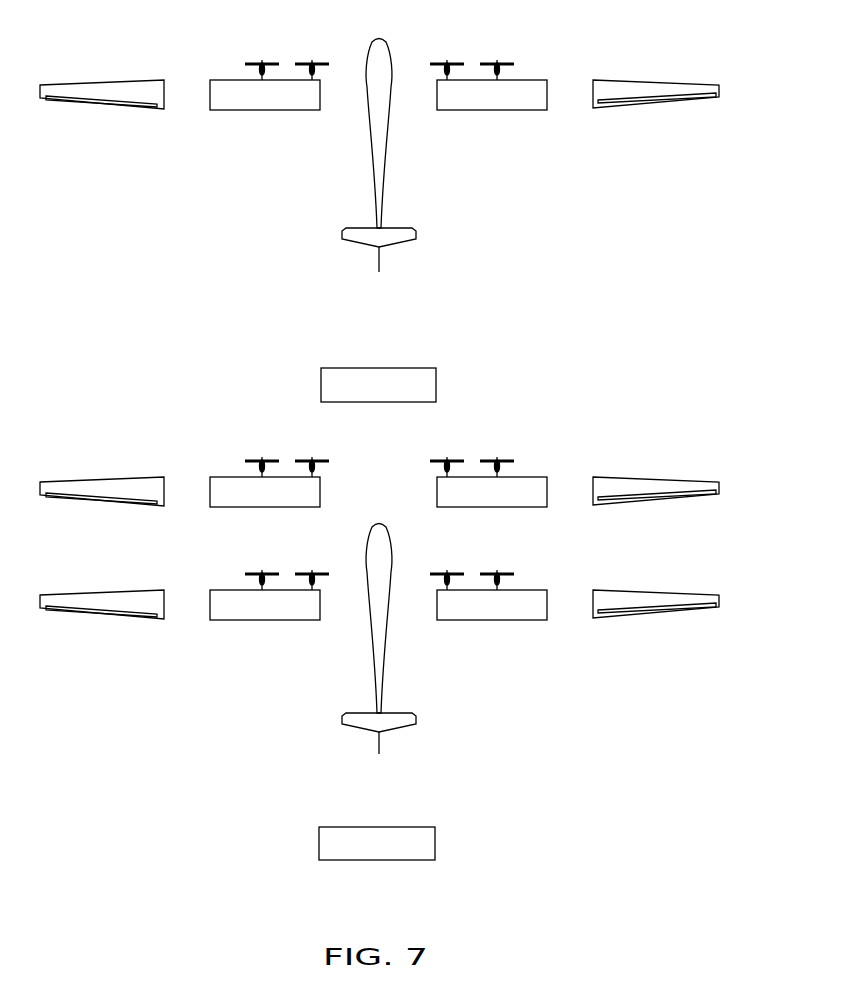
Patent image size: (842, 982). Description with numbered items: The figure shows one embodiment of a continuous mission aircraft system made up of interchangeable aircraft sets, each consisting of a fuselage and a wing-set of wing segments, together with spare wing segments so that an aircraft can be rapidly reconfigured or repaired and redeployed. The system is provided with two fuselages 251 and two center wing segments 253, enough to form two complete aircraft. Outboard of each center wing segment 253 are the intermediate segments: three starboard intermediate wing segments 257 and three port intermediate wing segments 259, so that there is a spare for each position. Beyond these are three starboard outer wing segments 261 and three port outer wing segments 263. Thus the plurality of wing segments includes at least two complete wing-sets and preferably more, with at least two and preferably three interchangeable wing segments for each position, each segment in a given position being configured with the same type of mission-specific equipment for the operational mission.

The fuselage 251 is at (392, 72).
The center wing segment 253 is at (380, 368).
The starboard intermediate wing segment 257 is at (525, 80).
The port intermediate wing segment 259 is at (234, 80).
The starboard outer wing segment 261 is at (695, 83).
The port outer wing segment 263 is at (63, 84).